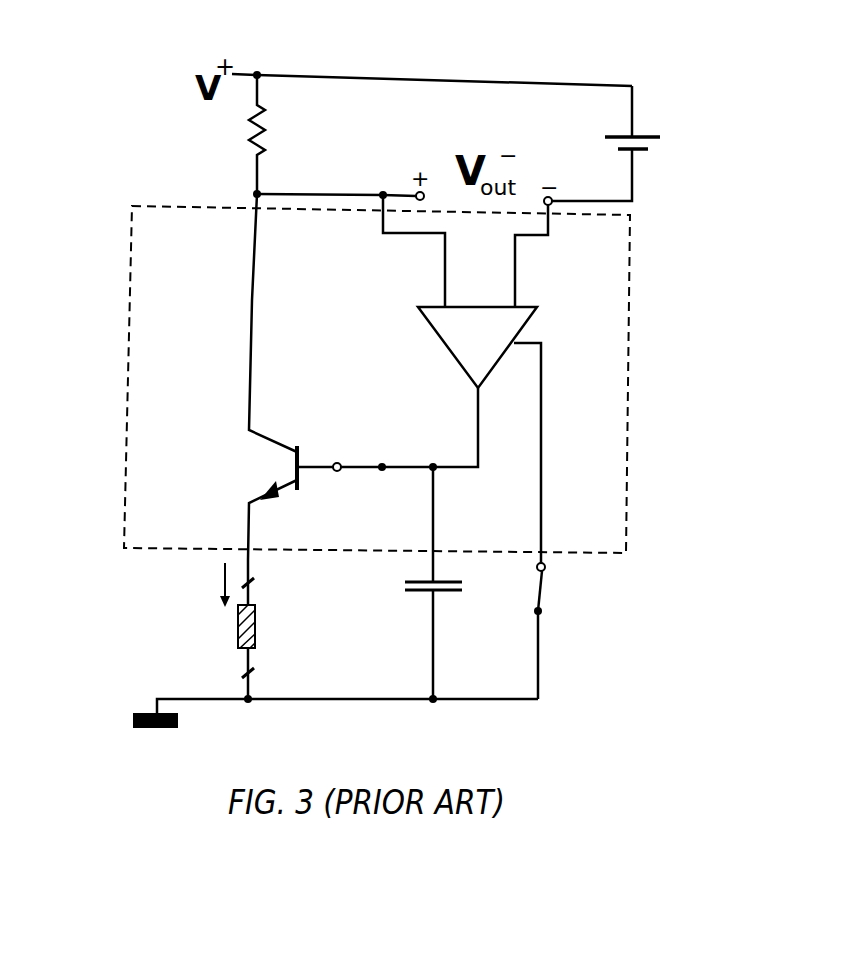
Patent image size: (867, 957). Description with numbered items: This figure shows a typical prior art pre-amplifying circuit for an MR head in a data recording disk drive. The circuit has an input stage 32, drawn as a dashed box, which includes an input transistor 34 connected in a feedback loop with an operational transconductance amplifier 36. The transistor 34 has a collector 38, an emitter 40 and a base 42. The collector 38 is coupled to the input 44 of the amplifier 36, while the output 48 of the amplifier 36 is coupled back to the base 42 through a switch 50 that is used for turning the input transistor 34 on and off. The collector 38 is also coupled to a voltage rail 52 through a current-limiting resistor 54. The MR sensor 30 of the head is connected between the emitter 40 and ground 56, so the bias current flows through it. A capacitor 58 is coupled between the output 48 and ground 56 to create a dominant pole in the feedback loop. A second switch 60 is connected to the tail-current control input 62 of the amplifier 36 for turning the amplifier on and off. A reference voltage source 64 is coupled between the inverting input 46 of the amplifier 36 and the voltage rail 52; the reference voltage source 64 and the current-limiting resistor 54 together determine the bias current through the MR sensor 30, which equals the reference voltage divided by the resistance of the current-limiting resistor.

The MR sensor 30 is at (236, 645).
The input stage 32 is at (630, 330).
The input transistor 34 is at (258, 474).
The operational transconductance amplifier 36 is at (438, 333).
The collector 38 is at (249, 367).
The emitter 40 is at (247, 527).
The base 42 is at (325, 470).
The input 44 is at (444, 278).
The inverting input 46 is at (516, 283).
The output 48 is at (478, 430).
The switch 50 is at (358, 463).
The voltage rail 52 is at (447, 77).
The current-limiting resistor 54 is at (250, 153).
The ground 56 is at (133, 722).
The capacitor 58 is at (455, 595).
The switch 60 is at (545, 588).
The tail-current control input 62 is at (542, 440).
The reference voltage source 64 is at (640, 150).